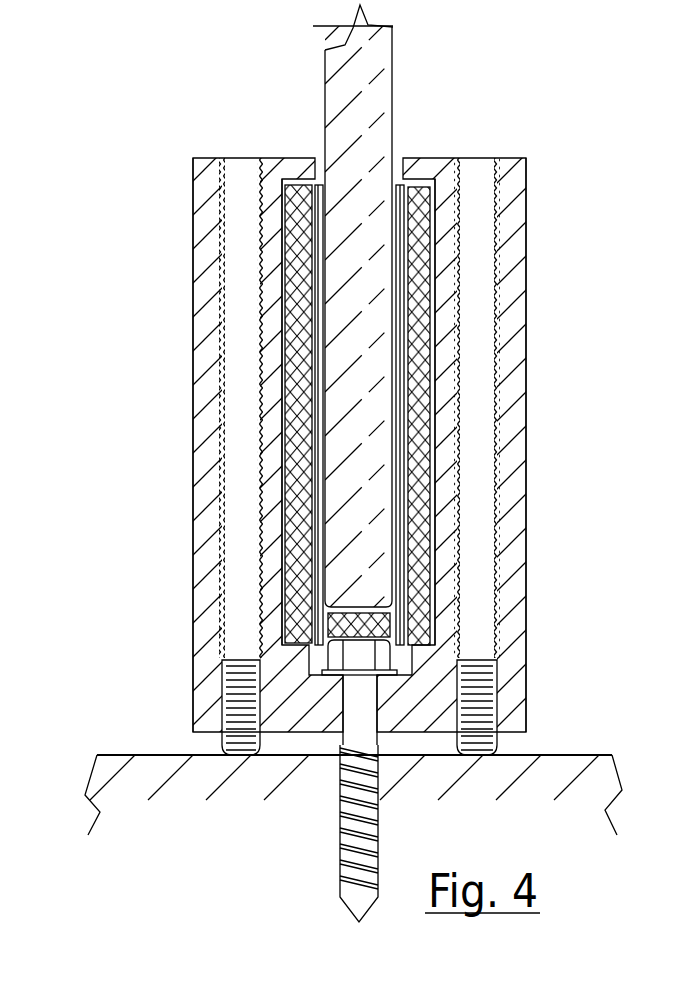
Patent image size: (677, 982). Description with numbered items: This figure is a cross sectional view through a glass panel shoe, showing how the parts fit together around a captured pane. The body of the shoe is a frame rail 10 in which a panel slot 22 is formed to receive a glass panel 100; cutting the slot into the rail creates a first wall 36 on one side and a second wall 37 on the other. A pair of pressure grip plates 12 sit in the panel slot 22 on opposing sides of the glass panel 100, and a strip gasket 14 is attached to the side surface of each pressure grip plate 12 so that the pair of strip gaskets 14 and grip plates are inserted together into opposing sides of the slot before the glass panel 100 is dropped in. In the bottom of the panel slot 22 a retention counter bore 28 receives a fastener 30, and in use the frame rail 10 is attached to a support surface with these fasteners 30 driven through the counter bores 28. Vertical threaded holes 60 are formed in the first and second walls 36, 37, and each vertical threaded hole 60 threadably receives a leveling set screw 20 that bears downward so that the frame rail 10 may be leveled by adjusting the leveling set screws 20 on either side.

The frame rail 10 is at (526, 364).
The pressure grip plate 12 is at (285, 510).
The strip gasket 14 is at (320, 340).
The leveling set screw 20 is at (240, 703).
The panel slot 22 is at (437, 347).
The retention counter bore 28 is at (322, 672).
The fastener 30 is at (350, 827).
The first wall 36 is at (193, 473).
The second wall 37 is at (526, 563).
The vertical threaded hole 60 is at (220, 246).
The glass panel 100 is at (396, 80).